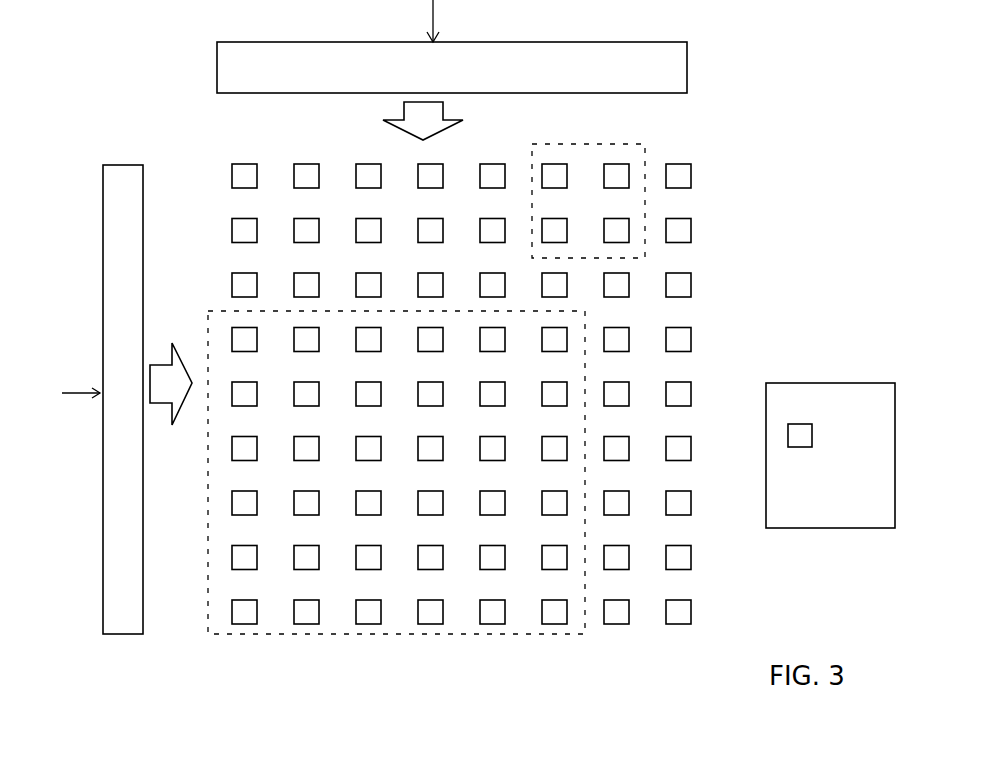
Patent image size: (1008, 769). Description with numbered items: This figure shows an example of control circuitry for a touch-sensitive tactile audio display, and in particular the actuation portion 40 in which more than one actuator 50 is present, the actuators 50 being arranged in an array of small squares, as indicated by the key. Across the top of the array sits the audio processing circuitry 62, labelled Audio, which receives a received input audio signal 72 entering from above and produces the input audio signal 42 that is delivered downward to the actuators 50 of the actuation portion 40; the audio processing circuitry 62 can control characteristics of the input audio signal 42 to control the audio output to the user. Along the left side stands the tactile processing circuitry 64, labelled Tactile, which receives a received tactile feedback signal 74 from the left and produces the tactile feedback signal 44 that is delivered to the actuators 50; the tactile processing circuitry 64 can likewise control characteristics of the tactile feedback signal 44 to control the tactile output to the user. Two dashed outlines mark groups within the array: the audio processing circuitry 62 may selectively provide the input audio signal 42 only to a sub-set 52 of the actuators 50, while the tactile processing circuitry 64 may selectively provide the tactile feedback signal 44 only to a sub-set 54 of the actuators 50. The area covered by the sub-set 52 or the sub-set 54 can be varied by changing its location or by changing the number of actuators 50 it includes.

The actuation portion 40 is at (733, 124).
The input audio signal 42 is at (383, 122).
The tactile feedback signal 44 is at (172, 343).
The actuator 50 is at (563, 394).
The sub-set of the actuators 52 is at (522, 634).
The sub-set of the actuators 54 is at (595, 150).
The audio processing circuitry 62 is at (217, 61).
The tactile processing circuitry 64 is at (125, 165).
The received input audio signal 72 is at (430, 5).
The received tactile feedback signal 74 is at (78, 403).